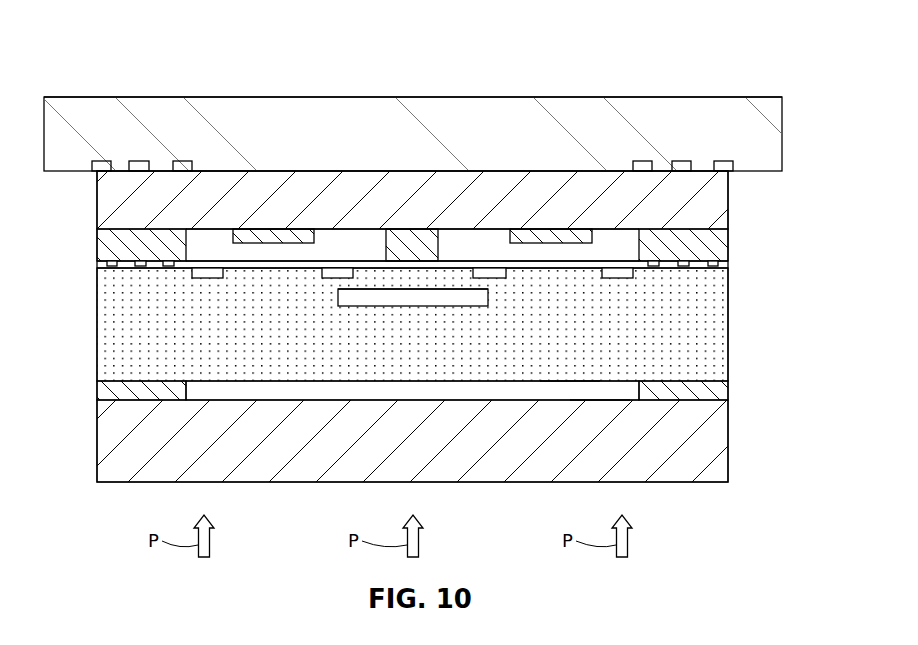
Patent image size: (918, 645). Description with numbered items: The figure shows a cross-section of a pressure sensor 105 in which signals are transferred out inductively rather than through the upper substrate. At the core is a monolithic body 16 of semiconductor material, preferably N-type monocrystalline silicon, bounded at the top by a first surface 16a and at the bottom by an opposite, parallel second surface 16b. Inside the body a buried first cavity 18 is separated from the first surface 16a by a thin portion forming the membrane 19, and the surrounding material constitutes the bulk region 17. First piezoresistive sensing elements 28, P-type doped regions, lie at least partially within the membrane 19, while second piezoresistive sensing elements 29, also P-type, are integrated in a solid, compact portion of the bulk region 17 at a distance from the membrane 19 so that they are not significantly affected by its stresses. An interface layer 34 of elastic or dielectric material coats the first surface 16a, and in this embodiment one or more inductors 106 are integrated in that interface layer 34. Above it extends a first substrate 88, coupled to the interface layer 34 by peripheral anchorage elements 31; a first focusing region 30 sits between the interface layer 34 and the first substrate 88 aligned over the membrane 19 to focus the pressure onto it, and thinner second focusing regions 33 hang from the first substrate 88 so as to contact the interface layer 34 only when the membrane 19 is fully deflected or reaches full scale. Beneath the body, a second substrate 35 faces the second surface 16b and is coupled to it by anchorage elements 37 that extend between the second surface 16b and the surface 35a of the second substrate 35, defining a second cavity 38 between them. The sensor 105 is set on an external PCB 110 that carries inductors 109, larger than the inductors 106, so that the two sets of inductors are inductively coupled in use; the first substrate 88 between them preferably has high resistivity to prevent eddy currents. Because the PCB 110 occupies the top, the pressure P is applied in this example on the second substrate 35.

The pressure sensor 105 is at (200, 64).
The PCB 110 is at (63, 97).
The inductors 109 is at (133, 138).
The first substrate 88 is at (100, 206).
The anchorage elements 31 is at (104, 243).
The first focusing region 30 is at (405, 245).
The second focusing regions 33 is at (273, 237).
The interface layer 34 is at (729, 264).
The inductors 106 is at (131, 274).
The monolithic body 16 is at (718, 344).
The bulk region 17 is at (142, 367).
The first surface 16a is at (592, 256).
The second surface 16b is at (571, 392).
The second piezoresistive sensing elements 29 is at (203, 279).
The first piezoresistive sensing elements 28 is at (330, 279).
The first cavity 18 is at (385, 302).
The membrane 19 is at (412, 282).
The anchorage elements 37 is at (102, 393).
The second cavity 38 is at (424, 392).
The second substrate 35 is at (110, 441).
The surface of the second substrate 35a is at (596, 386).